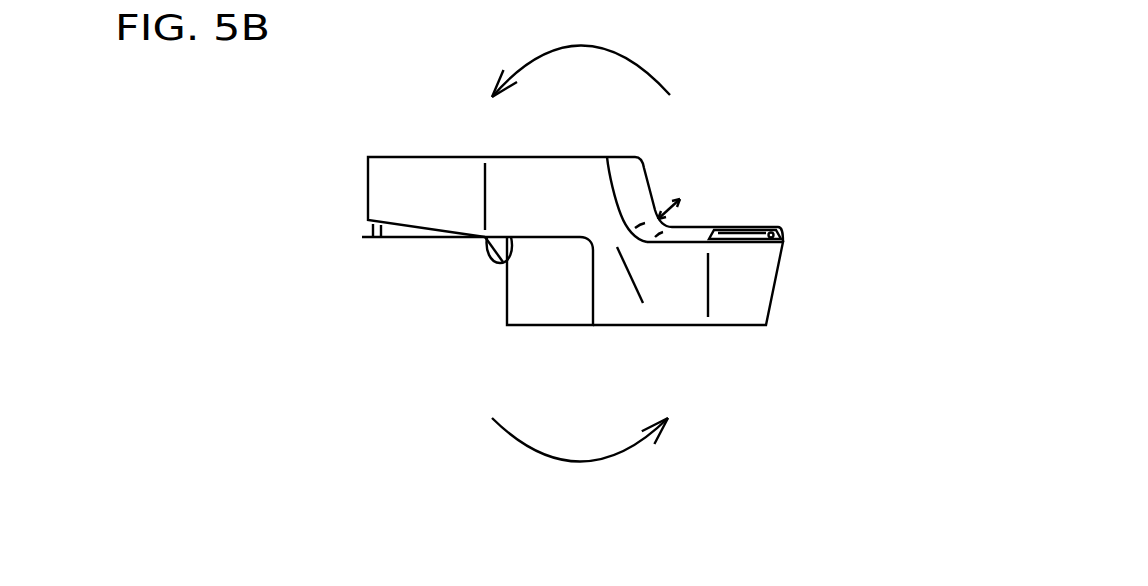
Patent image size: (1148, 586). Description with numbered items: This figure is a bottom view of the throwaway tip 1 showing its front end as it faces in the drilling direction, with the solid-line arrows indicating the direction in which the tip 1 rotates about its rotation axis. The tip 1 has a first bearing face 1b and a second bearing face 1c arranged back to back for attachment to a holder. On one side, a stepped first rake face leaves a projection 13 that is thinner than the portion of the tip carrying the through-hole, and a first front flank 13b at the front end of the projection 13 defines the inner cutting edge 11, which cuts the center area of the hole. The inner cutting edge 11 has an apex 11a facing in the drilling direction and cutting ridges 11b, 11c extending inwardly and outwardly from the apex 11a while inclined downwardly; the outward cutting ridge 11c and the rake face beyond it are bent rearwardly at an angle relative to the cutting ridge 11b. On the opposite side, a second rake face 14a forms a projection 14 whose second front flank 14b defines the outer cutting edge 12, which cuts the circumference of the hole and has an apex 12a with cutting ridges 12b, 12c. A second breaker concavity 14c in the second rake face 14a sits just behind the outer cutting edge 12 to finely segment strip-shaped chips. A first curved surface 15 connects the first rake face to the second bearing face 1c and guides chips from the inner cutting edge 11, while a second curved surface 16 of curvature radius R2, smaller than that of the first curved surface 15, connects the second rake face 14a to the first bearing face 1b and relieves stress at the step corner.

The throwaway tip 1 is at (722, 271).
The first bearing face 1b is at (560, 157).
The second bearing face 1c is at (568, 327).
The inner cutting edge 11 is at (492, 390).
The apex 11a is at (483, 237).
The cutting ridge 11b is at (514, 254).
The cutting ridge 11c is at (417, 235).
The outer cutting edge 12 is at (938, 122).
The apex 12a is at (720, 228).
The cutting ridge 12b is at (695, 227).
The cutting ridge 12c is at (758, 228).
The projection 13 is at (368, 188).
The first front flank 13b is at (422, 183).
The projection 14 is at (778, 278).
The second rake face 14a is at (687, 227).
The second front flank 14b is at (743, 325).
The second breaker concavity 14c is at (782, 230).
The first curved surface 15 is at (514, 254).
The second curved surface 16 is at (647, 242).
The curvature radius R2 is at (661, 208).